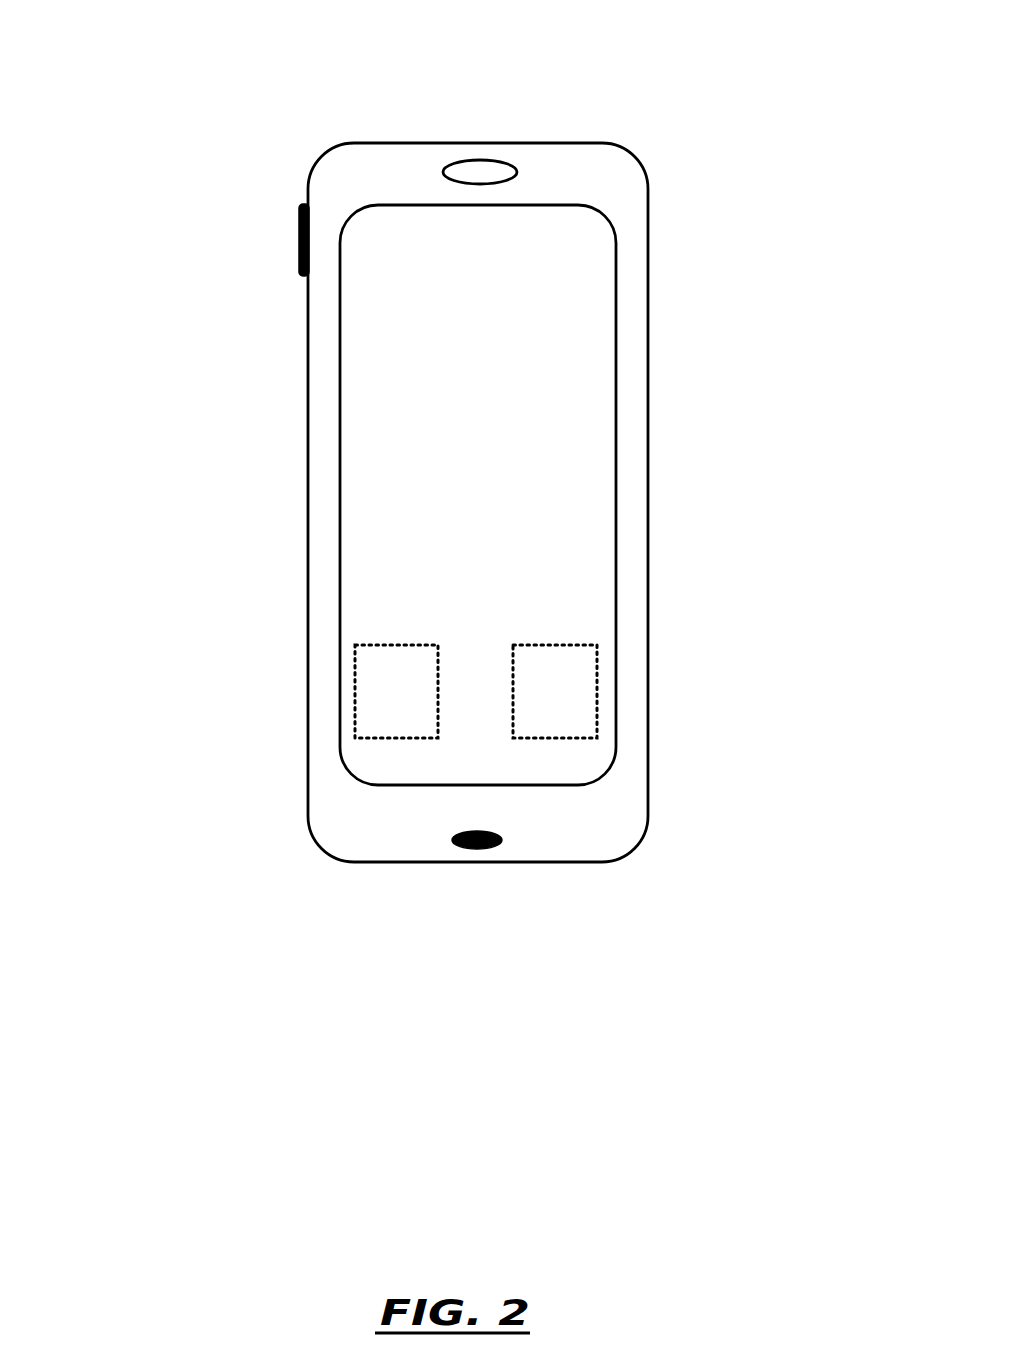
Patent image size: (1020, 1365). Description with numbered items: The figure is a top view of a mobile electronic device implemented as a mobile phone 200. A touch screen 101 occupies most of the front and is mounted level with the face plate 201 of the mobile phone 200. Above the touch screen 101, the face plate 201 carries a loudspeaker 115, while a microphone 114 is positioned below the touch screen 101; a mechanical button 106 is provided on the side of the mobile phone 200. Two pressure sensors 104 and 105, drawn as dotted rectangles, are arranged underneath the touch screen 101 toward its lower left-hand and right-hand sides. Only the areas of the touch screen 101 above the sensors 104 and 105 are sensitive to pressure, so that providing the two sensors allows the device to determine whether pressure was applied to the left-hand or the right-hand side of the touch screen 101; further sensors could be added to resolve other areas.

The mobile phone 200 is at (225, 90).
The face plate 201 is at (622, 185).
The touch screen 101 is at (612, 372).
The loudspeaker 115 is at (483, 165).
The mechanical button 106 is at (300, 244).
The microphone 114 is at (482, 850).
The pressure sensor 104 is at (375, 705).
The pressure sensor 105 is at (578, 692).